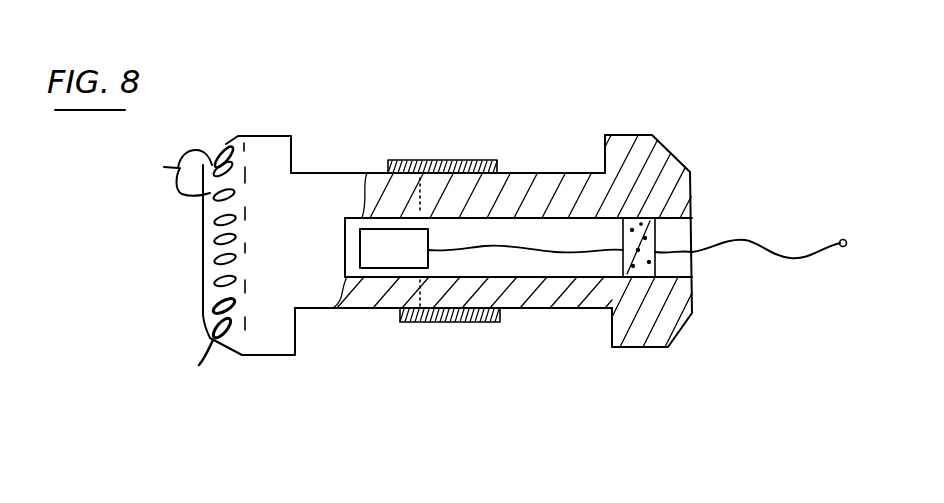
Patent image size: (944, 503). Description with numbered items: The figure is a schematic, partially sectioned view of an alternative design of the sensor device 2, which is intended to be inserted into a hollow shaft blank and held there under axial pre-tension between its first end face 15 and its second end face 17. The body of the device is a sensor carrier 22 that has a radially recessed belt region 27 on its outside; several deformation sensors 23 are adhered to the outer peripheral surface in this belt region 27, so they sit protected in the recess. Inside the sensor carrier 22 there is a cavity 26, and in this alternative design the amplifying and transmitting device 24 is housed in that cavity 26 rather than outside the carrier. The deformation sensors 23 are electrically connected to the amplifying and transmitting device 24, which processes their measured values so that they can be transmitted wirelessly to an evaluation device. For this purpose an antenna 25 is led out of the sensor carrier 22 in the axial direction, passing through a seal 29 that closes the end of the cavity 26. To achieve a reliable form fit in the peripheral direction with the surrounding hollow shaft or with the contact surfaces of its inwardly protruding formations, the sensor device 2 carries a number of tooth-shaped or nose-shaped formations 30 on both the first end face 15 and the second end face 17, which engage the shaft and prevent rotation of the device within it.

The sensor device 2 is at (562, 125).
The first end face 15 is at (700, 297).
The second end face 17 is at (198, 268).
The sensor carrier 22 is at (317, 192).
The deformation sensors 23 is at (465, 160).
The amplifying and transmitting device 24 is at (383, 252).
The antenna 25 is at (782, 250).
The cavity 26 is at (565, 228).
The radially recessed belt region 27 is at (367, 150).
The seal 29 is at (632, 261).
The tooth-shaped or nose-shaped formations 30 is at (171, 274).